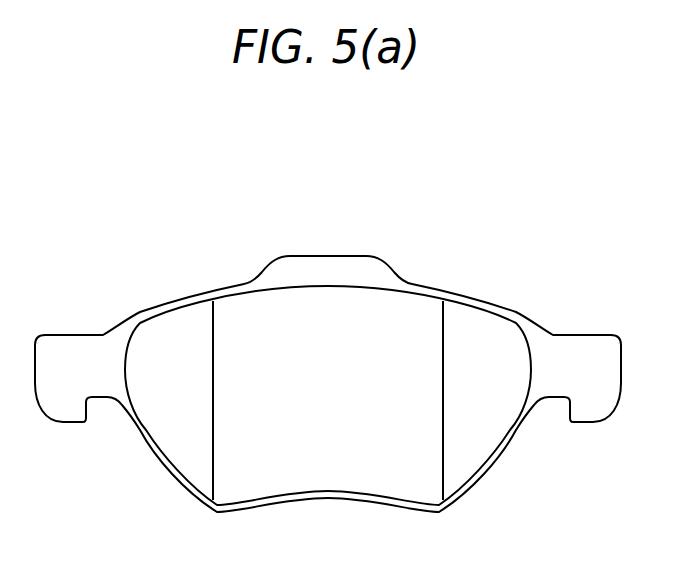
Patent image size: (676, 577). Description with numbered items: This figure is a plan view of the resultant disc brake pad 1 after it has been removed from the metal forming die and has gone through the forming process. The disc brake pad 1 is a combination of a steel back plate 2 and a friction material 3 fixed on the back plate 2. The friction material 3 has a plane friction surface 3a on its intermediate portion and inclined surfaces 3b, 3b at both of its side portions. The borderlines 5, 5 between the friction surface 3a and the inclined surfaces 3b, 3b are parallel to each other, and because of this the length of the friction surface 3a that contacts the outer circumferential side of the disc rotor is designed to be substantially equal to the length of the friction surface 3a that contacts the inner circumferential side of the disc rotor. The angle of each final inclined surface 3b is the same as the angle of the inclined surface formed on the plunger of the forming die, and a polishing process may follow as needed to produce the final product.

The disc brake pad 1 is at (328, 328).
The back plate 2 is at (327, 267).
The friction material 3 is at (328, 480).
The friction surface 3a is at (342, 406).
The inclined surface 3b is at (178, 450).
The borderline 5 is at (213, 355).